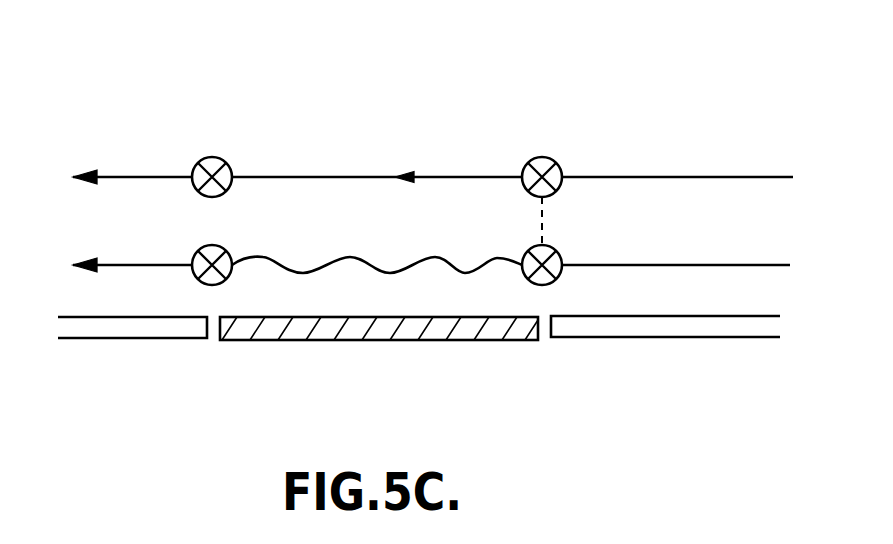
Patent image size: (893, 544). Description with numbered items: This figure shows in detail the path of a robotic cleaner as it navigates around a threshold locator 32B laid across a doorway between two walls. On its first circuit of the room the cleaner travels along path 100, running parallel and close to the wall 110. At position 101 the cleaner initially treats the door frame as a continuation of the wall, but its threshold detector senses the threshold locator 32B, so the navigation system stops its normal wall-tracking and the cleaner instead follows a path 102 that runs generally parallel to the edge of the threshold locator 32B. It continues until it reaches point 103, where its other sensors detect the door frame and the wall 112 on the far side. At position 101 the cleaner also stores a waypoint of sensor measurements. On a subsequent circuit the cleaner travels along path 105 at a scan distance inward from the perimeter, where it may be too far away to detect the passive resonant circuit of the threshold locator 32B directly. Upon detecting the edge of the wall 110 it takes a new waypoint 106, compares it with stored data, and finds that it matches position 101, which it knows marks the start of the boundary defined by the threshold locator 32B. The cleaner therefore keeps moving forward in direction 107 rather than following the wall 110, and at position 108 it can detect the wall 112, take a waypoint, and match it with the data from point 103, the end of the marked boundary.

The path 100 is at (640, 265).
The position 101 is at (545, 282).
The path parallel to threshold locator edge 102 is at (372, 262).
The point 103 is at (201, 254).
The path 105 is at (672, 177).
The waypoint 106 is at (545, 157).
The direction 107 is at (453, 177).
The position 108 is at (212, 157).
The wall 110 is at (560, 328).
The wall 112 is at (197, 330).
The threshold locator 32B is at (398, 340).